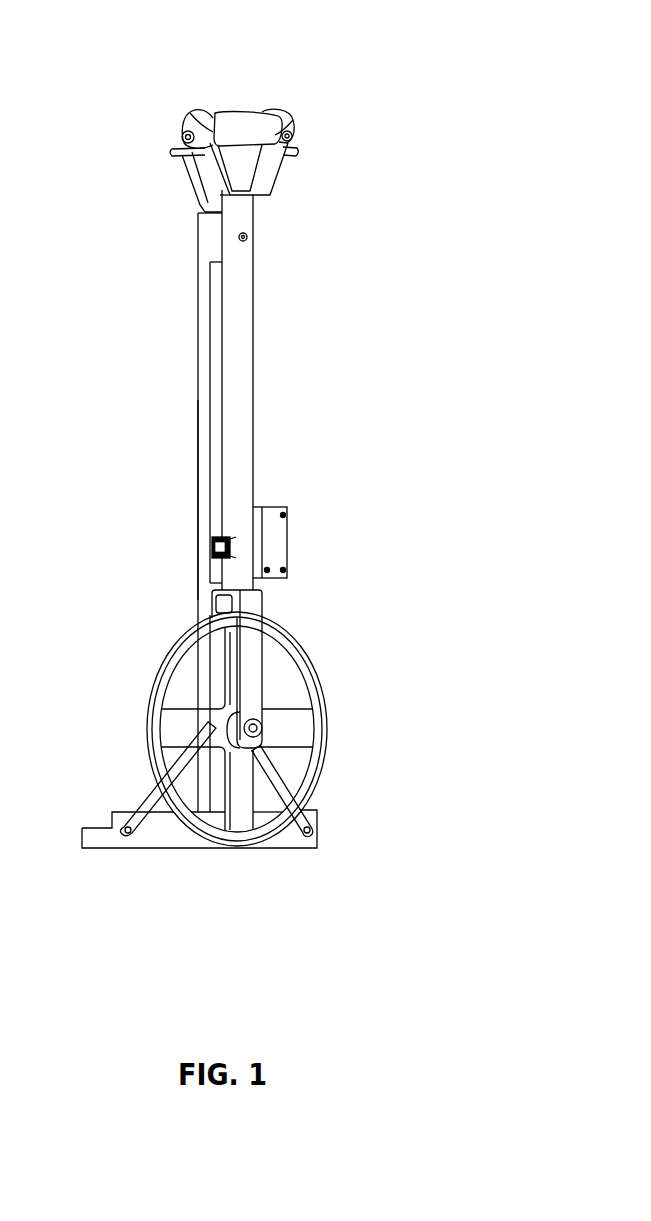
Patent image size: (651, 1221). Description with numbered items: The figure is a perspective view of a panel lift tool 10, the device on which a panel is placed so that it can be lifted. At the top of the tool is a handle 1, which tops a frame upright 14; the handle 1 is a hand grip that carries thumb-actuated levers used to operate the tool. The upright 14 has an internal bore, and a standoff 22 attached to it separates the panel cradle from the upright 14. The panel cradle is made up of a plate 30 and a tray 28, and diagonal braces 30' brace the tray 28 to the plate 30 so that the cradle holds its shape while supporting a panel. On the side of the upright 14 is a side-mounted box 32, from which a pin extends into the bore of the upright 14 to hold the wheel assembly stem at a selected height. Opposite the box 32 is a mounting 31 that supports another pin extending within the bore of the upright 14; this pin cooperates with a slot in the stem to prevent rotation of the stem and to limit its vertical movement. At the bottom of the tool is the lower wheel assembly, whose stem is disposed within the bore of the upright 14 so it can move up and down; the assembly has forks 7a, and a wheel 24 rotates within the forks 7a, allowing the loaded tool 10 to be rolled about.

The panel lift tool 10 is at (413, 90).
The handle 1 is at (233, 124).
The upright 14 is at (244, 294).
The standoff 22 is at (216, 385).
The plate 30 is at (142, 500).
The mounting 31 is at (212, 550).
The box 32 is at (278, 540).
The forks 7a is at (253, 608).
The wheel 24 is at (318, 670).
The diagonal braces 30' is at (235, 791).
The tray 28 is at (292, 842).